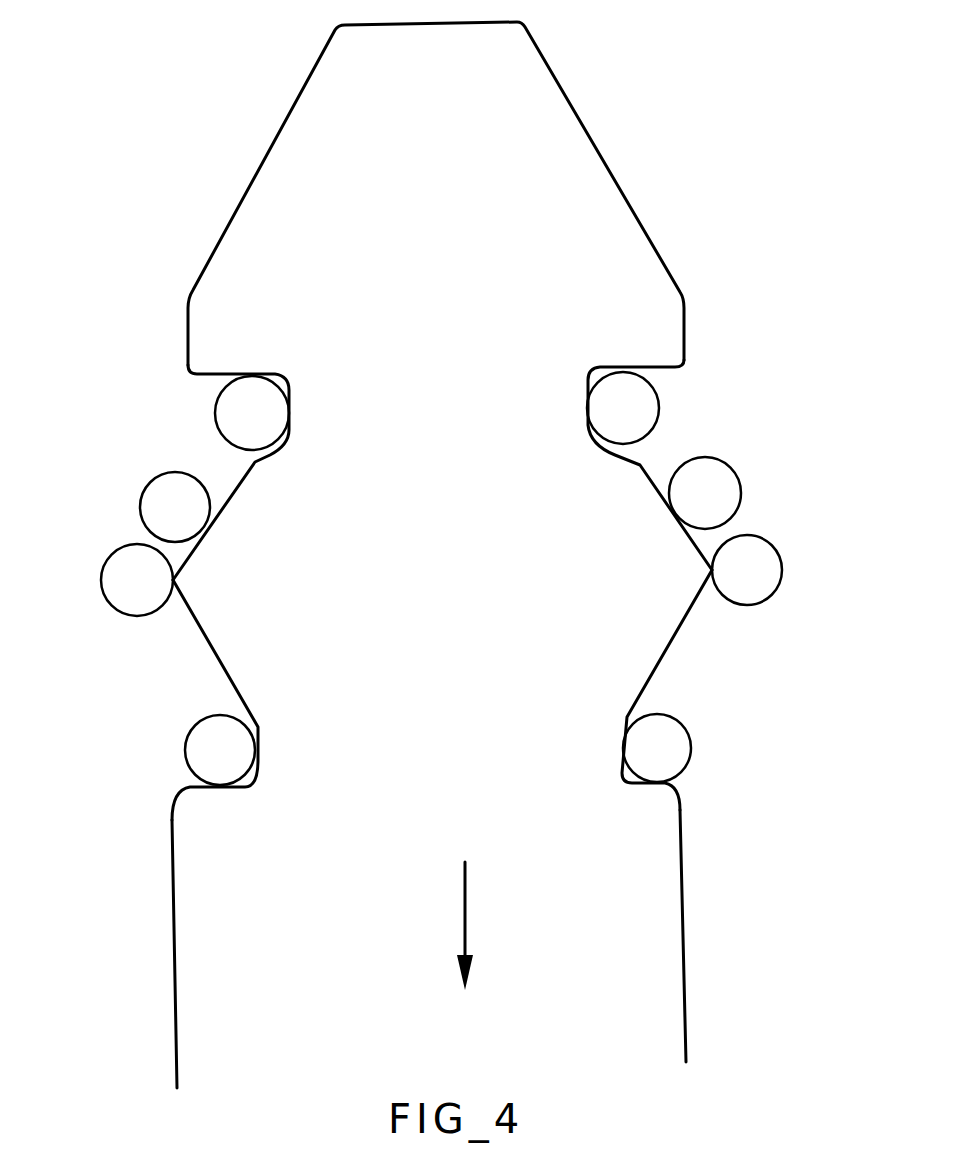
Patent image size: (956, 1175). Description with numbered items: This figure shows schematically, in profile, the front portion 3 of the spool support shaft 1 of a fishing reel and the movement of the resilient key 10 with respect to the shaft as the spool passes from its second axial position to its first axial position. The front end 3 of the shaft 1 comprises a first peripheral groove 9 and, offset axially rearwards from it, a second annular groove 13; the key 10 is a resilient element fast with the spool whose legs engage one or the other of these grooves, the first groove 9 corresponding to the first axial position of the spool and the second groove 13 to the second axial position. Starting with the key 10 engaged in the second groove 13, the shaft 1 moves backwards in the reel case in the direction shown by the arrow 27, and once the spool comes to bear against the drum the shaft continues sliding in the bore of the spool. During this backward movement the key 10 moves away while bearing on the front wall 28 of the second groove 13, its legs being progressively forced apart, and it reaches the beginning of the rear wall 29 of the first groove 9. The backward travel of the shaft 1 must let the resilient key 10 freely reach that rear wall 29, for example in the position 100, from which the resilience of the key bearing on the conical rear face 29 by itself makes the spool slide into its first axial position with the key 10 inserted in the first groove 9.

The spool support shaft 1 is at (655, 966).
The front portion of the spool support shaft 3 is at (563, 165).
The first peripheral groove 9 is at (577, 366).
The resilient key 10 is at (670, 748).
The second annular groove 13 is at (623, 712).
The arrow 27 is at (465, 918).
The front wall of the second groove 28 is at (212, 667).
The rear wall of the first groove 29 is at (232, 478).
The position of the resilient key 100 is at (717, 488).